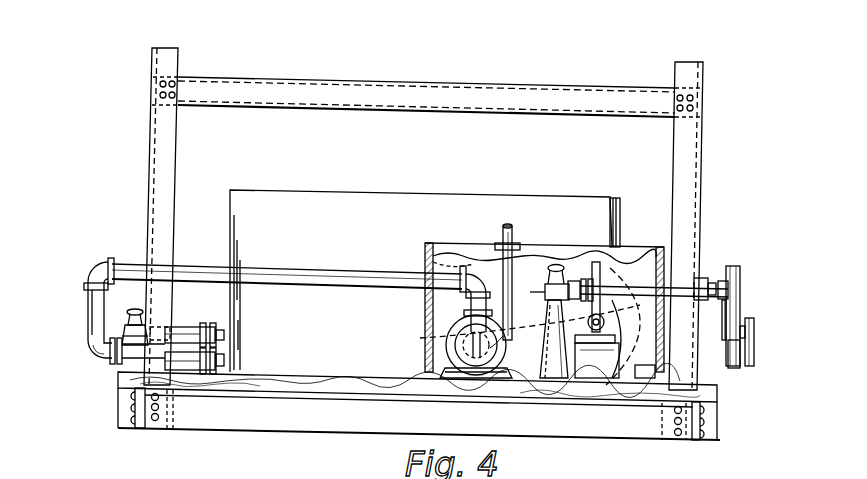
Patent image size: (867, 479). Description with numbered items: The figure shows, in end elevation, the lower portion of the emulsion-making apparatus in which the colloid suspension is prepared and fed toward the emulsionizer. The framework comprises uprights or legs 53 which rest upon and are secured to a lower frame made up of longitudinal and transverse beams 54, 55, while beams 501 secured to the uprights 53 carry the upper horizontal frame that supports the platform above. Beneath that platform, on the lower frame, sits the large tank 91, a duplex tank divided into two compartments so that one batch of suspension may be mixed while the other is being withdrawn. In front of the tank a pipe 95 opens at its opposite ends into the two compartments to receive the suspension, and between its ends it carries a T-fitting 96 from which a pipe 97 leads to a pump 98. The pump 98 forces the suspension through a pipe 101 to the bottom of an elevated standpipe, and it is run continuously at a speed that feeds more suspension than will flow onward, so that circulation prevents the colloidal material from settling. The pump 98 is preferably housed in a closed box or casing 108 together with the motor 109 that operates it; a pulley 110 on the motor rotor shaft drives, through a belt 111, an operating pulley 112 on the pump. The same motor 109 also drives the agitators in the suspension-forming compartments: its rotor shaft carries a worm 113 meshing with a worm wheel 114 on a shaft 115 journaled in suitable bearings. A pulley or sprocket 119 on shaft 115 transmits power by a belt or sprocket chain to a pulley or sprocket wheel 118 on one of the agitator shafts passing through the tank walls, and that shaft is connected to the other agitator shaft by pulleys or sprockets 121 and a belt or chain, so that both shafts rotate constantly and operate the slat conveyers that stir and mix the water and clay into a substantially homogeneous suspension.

The uprights or legs 53 is at (167, 165).
The longitudinal beams 54 is at (128, 417).
The transverse beams 55 is at (357, 420).
The large tank 91 is at (300, 198).
The pipe 95 is at (205, 398).
The T-fitting 96 is at (86, 355).
The pipe 97 is at (379, 270).
The pump 98 is at (445, 344).
The pipe 101 is at (512, 240).
The closed box or casing 108 is at (424, 297).
The motor 109 is at (636, 295).
The pulley 110 is at (558, 263).
The belt 111 is at (525, 315).
The operating pulley 112 is at (507, 385).
The worm 113 is at (625, 387).
The worm wheel 114 is at (611, 198).
The shaft 115 is at (678, 281).
The pulley or sprocket wheel 118 is at (734, 370).
The pulley or sprocket 119 is at (733, 268).
The pulleys or sprockets 121 is at (750, 315).
The beams 501 is at (404, 88).